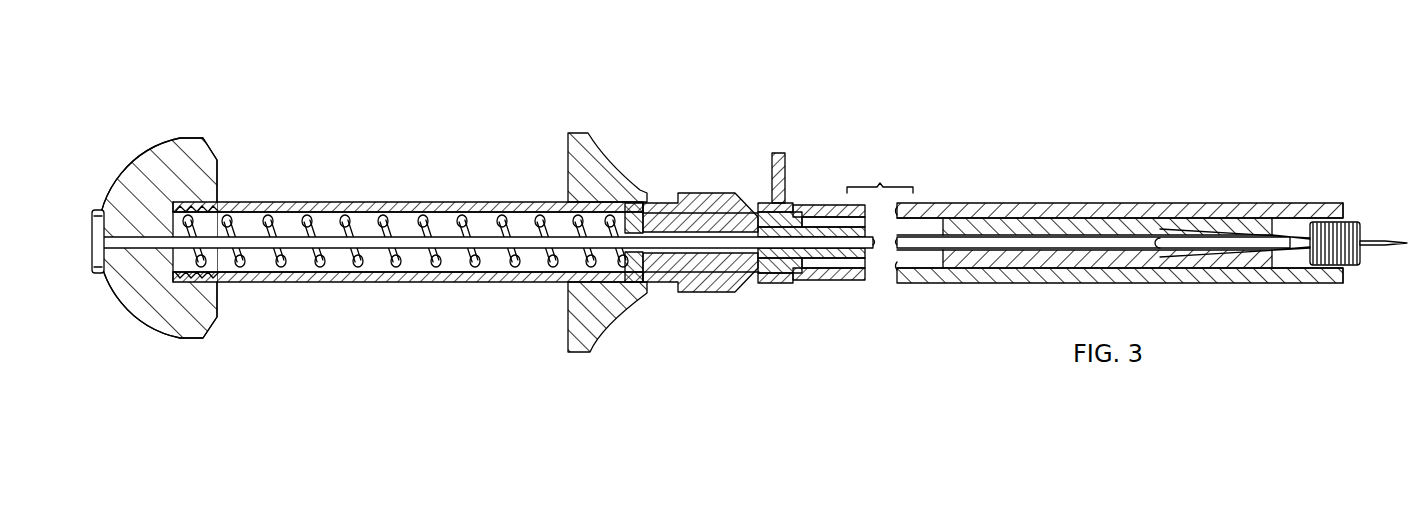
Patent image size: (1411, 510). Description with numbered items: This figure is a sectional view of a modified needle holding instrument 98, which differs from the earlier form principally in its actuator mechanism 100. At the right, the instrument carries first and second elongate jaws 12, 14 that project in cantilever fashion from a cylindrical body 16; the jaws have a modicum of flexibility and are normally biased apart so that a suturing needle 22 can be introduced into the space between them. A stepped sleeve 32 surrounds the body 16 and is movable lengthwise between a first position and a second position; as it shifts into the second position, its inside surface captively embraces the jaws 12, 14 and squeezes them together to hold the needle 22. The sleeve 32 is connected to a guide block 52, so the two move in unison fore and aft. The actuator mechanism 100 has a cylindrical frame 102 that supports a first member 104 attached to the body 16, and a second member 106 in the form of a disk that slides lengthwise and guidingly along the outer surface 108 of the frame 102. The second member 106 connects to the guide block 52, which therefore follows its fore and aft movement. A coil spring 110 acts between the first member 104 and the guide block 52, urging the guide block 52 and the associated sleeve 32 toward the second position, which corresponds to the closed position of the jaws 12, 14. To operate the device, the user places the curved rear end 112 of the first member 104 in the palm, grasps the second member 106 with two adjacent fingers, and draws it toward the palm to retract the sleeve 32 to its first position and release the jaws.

The actuator mechanism 100 is at (469, 347).
The modified needle holding instrument 98 is at (909, 361).
The first member 104 is at (140, 193).
The curved rear end 112 is at (103, 187).
The cylindrical frame 102 is at (377, 207).
The outer surface 108 is at (418, 203).
The coil spring 110 is at (321, 262).
The cylindrical body 16 is at (452, 240).
The second member 106 is at (593, 168).
The guide block 52 is at (698, 207).
The stepped sleeve 32 is at (992, 222).
The first elongate jaw 12 is at (1358, 218).
The second elongate jaw 14 is at (1352, 263).
The suturing needle 22 is at (1370, 237).